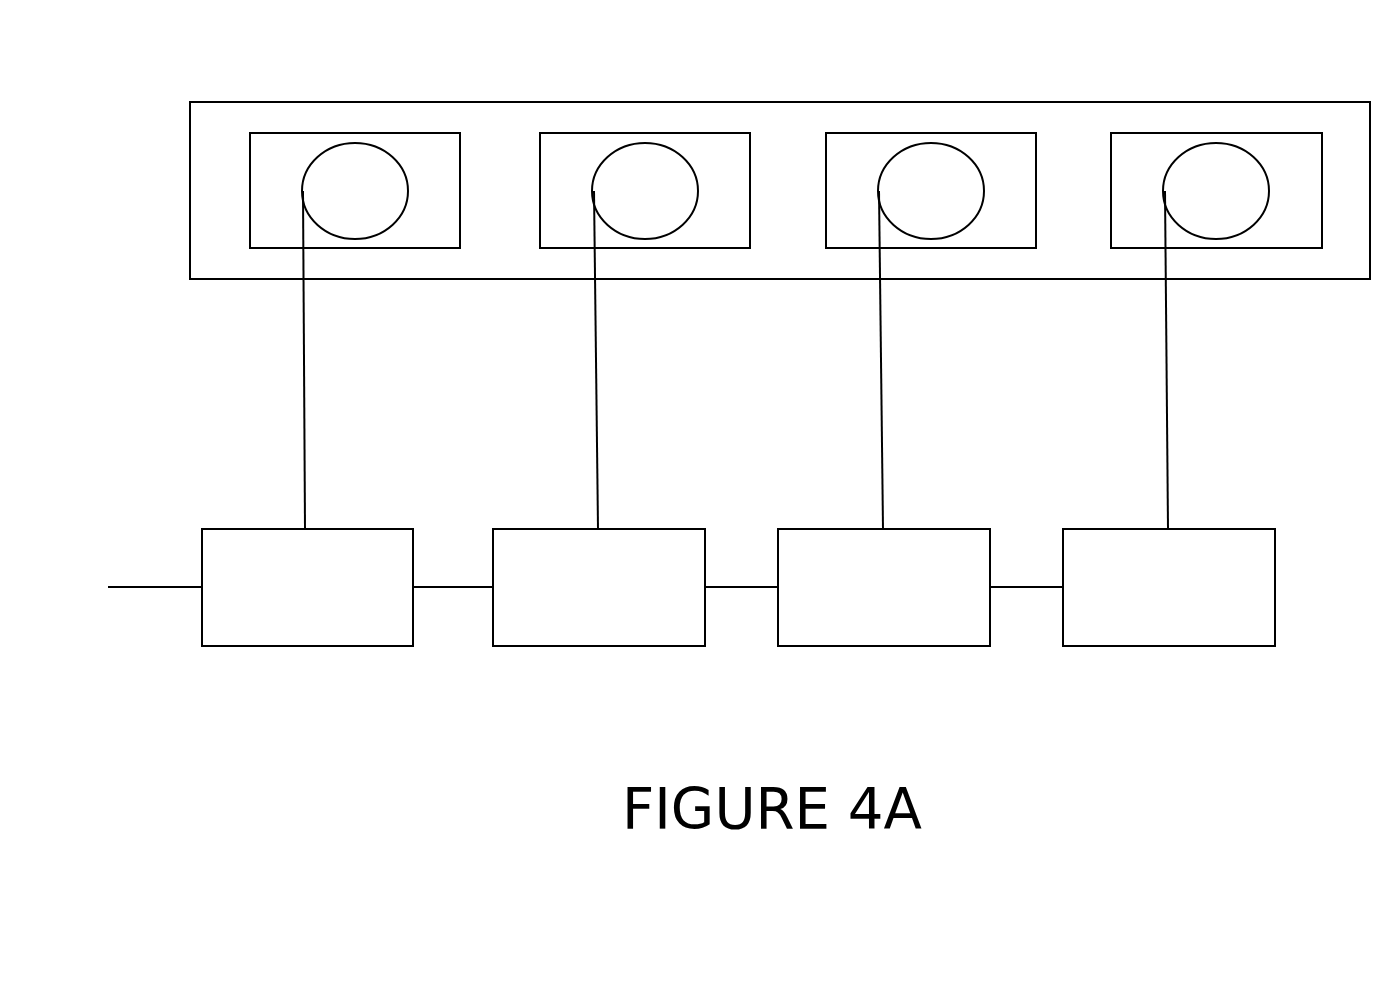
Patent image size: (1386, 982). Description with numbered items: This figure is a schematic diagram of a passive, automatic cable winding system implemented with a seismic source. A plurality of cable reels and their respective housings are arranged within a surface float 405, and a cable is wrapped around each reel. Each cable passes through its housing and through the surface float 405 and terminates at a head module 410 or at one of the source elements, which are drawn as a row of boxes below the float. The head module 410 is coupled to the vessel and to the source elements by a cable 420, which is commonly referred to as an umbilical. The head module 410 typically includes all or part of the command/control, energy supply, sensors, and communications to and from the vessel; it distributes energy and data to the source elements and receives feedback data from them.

The surface float 405 is at (780, 279).
The head module 410 is at (307, 587).
The cable 420 is at (170, 587).